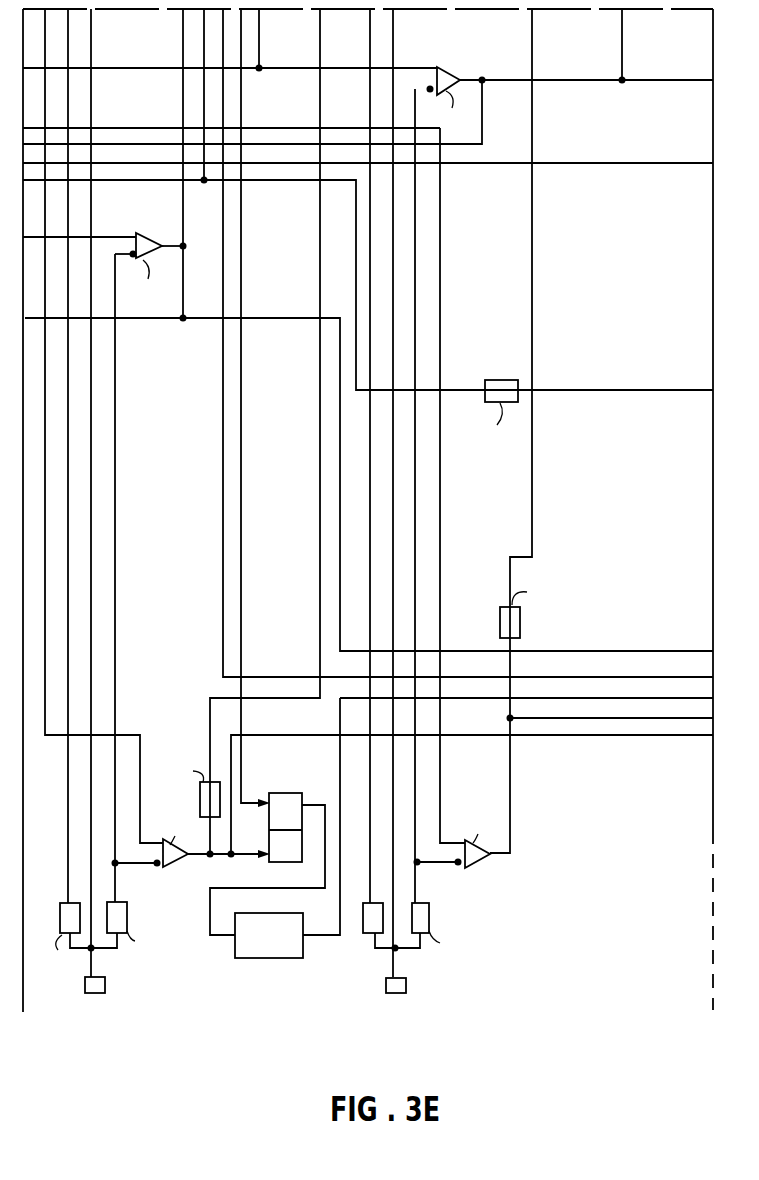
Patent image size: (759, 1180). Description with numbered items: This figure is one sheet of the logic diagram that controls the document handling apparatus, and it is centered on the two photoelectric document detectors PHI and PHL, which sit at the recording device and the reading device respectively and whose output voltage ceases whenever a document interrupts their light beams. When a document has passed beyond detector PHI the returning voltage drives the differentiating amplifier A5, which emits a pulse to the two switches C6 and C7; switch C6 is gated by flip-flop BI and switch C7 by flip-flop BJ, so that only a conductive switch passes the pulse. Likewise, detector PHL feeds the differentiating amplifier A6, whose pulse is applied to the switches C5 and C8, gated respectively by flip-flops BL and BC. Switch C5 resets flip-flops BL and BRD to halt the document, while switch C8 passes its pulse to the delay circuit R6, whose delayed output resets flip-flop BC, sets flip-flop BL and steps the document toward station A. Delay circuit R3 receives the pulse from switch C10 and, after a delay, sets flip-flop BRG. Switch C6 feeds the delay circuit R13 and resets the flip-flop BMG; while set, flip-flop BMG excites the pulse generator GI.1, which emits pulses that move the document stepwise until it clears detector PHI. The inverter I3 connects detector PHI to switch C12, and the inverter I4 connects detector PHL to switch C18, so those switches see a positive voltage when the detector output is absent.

The switch C5 is at (447, 75).
The switch C7 is at (149, 238).
The delay circuit R3 is at (517, 364).
The delay circuit R6 is at (520, 636).
The delay circuit R13 is at (184, 781).
The switch C6 is at (172, 864).
The switch C8 is at (474, 863).
The flip-flop BMG is at (288, 828).
The inverter I3 is at (60, 912).
The differentiating amplifier A5 is at (127, 925).
The detector PHI is at (105, 985).
The pulse generator GI.1 is at (248, 959).
The inverter I4 is at (363, 928).
The differentiating amplifier A6 is at (429, 925).
The detector PHL is at (406, 985).